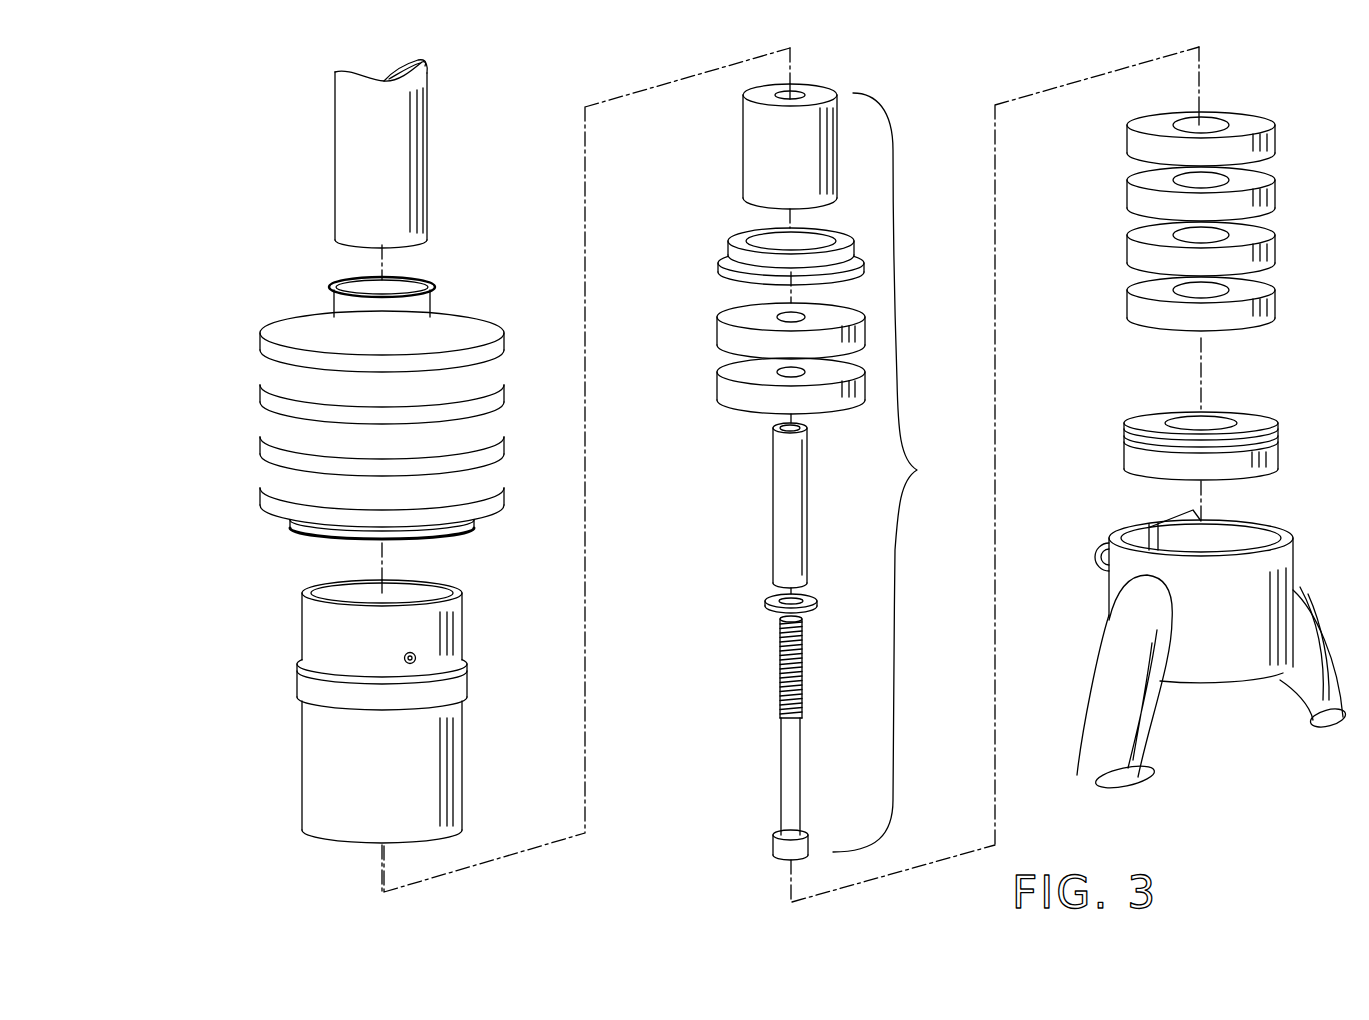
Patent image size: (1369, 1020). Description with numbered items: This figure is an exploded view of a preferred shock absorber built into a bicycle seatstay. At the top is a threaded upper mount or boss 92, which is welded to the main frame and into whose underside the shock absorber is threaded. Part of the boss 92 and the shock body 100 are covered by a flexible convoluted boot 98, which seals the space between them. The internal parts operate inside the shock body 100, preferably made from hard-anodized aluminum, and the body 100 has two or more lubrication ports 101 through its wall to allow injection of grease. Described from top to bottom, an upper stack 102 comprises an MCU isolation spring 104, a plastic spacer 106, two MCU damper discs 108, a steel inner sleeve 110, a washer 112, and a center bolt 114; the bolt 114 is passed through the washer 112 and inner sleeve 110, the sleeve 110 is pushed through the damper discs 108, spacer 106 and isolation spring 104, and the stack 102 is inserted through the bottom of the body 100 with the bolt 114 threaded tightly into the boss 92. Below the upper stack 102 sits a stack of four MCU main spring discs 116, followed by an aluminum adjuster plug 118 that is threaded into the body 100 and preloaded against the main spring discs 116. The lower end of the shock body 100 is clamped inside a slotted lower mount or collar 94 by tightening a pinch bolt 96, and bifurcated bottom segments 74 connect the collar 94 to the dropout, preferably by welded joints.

The bifurcated bottom segments 74 is at (1145, 768).
The threaded upper mount or boss 92 is at (345, 152).
The slotted lower mount or collar 94 is at (1250, 657).
The pinch bolt 96 is at (1095, 565).
The flexible convoluted boot 98 is at (290, 383).
The shock body 100 is at (322, 735).
The lubrication ports 101 is at (400, 658).
The upper stack 102 is at (900, 472).
The MCU isolation spring 104 is at (760, 152).
The plastic spacer 106 is at (720, 262).
The MCU damper discs 108 is at (728, 405).
The steel inner sleeve 110 is at (782, 508).
The washer 112 is at (770, 600).
The center bolt 114 is at (788, 758).
The MCU main spring discs 116 is at (1135, 146).
The aluminum adjuster plug 118 is at (1133, 460).